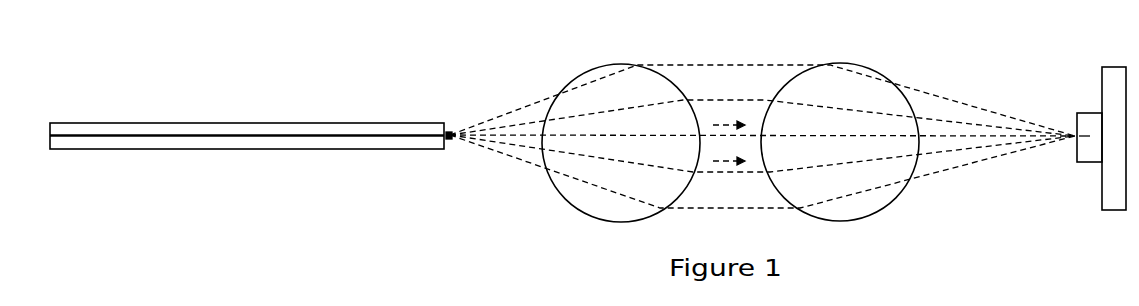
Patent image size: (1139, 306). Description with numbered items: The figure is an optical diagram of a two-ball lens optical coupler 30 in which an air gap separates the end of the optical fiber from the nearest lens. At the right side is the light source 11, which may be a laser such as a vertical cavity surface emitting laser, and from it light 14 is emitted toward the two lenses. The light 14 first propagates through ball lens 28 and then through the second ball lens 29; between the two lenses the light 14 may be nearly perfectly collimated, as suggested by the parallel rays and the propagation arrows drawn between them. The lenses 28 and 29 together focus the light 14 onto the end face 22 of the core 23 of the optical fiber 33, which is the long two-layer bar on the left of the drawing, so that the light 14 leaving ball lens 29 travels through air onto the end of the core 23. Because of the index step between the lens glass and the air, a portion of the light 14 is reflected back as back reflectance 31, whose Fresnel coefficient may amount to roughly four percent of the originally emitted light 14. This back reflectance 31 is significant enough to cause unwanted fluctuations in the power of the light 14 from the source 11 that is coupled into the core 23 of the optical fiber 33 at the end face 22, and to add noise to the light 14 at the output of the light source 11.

The optical fiber 33 is at (168, 123).
The core 23 is at (362, 140).
The end face 22 is at (452, 142).
The light 14 is at (630, 103).
The second ball lens 29 is at (592, 73).
The ball lens 28 is at (892, 208).
The back reflectance 31 is at (726, 160).
The two-ball lens optical coupler 30 is at (952, 47).
The light source 11 is at (1088, 162).